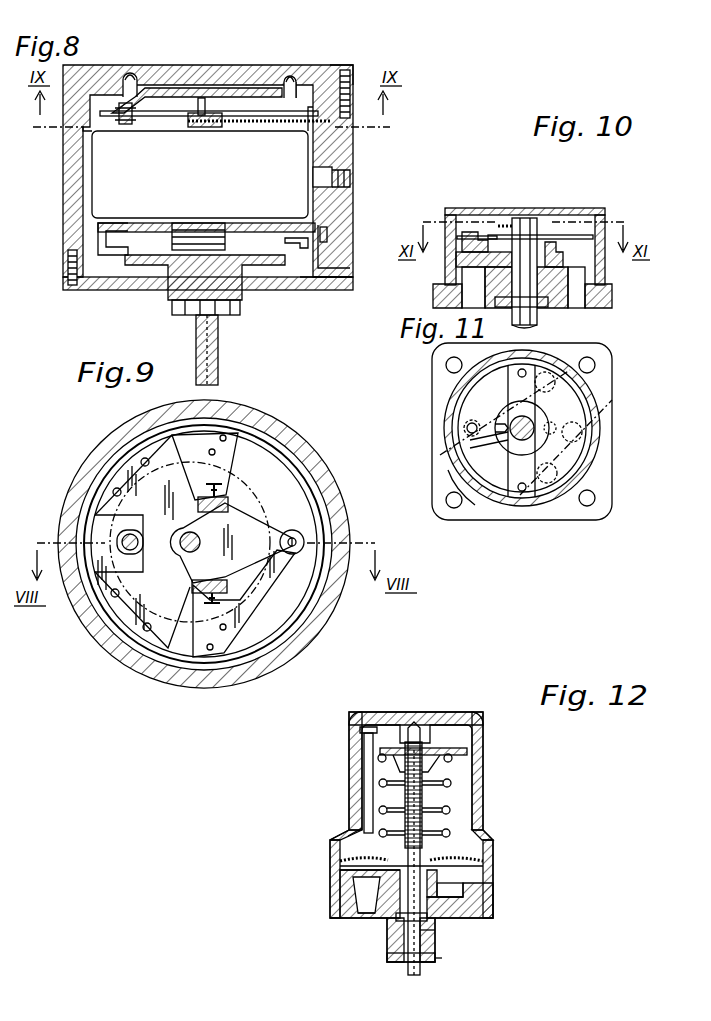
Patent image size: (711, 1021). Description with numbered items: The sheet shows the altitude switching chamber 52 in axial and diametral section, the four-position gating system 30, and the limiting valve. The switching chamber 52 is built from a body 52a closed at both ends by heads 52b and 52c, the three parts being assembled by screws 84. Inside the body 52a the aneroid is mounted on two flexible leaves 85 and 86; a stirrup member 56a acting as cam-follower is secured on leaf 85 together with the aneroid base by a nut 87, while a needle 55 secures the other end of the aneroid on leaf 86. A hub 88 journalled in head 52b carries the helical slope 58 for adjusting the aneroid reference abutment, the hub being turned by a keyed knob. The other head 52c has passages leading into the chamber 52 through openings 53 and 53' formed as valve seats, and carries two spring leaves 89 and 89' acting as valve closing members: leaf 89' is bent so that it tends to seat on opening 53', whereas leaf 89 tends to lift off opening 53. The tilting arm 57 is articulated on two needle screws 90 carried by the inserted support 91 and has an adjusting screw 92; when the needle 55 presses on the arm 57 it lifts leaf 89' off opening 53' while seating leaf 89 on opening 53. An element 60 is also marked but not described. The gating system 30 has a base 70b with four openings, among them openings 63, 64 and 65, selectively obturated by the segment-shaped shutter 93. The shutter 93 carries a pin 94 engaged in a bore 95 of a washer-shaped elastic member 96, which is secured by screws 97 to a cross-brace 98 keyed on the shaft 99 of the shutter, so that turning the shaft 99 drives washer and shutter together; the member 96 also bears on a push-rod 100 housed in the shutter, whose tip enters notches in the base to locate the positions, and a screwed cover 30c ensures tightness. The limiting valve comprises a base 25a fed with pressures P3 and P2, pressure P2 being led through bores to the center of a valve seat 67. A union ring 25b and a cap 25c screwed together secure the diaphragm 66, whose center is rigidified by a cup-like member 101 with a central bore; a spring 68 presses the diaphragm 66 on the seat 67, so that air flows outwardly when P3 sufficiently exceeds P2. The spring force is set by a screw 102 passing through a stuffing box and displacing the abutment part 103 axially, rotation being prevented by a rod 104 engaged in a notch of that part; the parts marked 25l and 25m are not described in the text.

In FIG. 8, the switching chamber 52 is at (353, 220).
In FIG. 8, the body 52a is at (353, 268).
In FIG. 8, the head 52b is at (312, 285).
In FIG. 8, the head 52c is at (355, 67).
In FIG. 8, the opening 53 is at (145, 66).
In FIG. 8, the opening 53' is at (315, 67).
In FIG. 8, the needle 55 is at (207, 117).
In FIG. 8, the stirrup member 56a is at (98, 240).
In FIG. 8, the tilting arm 57 is at (230, 100).
In FIG. 9, the tilting arm 57 is at (253, 518).
In FIG. 8, the helical slope 58 is at (145, 266).
In FIG. 8, the slot 60 is at (351, 176).
In FIG. 8, the screws 84 is at (350, 72).
In FIG. 8, the flexible leaf 85 is at (252, 226).
In FIG. 8, the flexible leaf 86 is at (275, 124).
In FIG. 8, the nut 87 is at (260, 266).
In FIG. 8, the hub 88 is at (185, 305).
In FIG. 9, the spring leaf 89 is at (256, 457).
In FIG. 9, the spring leaf 89' is at (284, 603).
In FIG. 9, the needle screws 90 is at (222, 487).
In FIG. 8, the inserted support 91 is at (228, 96).
In FIG. 9, the inserted support 91 is at (128, 472).
In FIG. 8, the adjusting screw 92 is at (127, 126).
In FIG. 11, the four-position gating system 30 is at (624, 445).
In FIG. 10, the screwed cover 30c is at (603, 210).
In FIG. 11, the opening 63 is at (573, 363).
In FIG. 10, the opening 64 is at (577, 285).
In FIG. 11, the opening 64 is at (607, 407).
In FIG. 11, the opening 65 is at (535, 510).
In FIG. 10, the base 70b is at (613, 297).
In FIG. 10, the shutter 93 is at (462, 258).
In FIG. 11, the shutter 93 is at (495, 510).
In FIG. 10, the pin 94 is at (478, 235).
In FIG. 11, the pin 94 is at (470, 428).
In FIG. 11, the bore 95 is at (463, 447).
In FIG. 10, the washer-shaped elastic member 96 is at (460, 237).
In FIG. 11, the washer-shaped elastic member 96 is at (572, 457).
In FIG. 11, the screws 97 is at (524, 372).
In FIG. 10, the cross-brace 98 is at (543, 224).
In FIG. 11, the cross-brace 98 is at (502, 437).
In FIG. 10, the shaft 99 is at (522, 225).
In FIG. 11, the shaft 99 is at (520, 428).
In FIG. 10, the push-rod 100 is at (563, 242).
In FIG. 11, the push-rod 100 is at (605, 480).
In FIG. 12, the diaphragm 66 is at (488, 835).
In FIG. 12, the valve seat 67 is at (463, 893).
In FIG. 12, the spring 68 is at (450, 808).
In FIG. 12, the cup-like member 101 is at (493, 868).
In FIG. 12, the screw 102 is at (405, 970).
In FIG. 12, the abutment part 103 is at (440, 750).
In FIG. 12, the rod 104 is at (367, 712).
In FIG. 12, the base 25a is at (332, 917).
In FIG. 12, the union ring 25b is at (330, 875).
In FIG. 12, the cap 25c is at (348, 812).
In FIG. 12, the port 25l is at (437, 930).
In FIG. 12, the port 25m is at (437, 960).
In FIG. 12, the pressure P2 is at (447, 906).
In FIG. 12, the pressure P3 is at (365, 908).